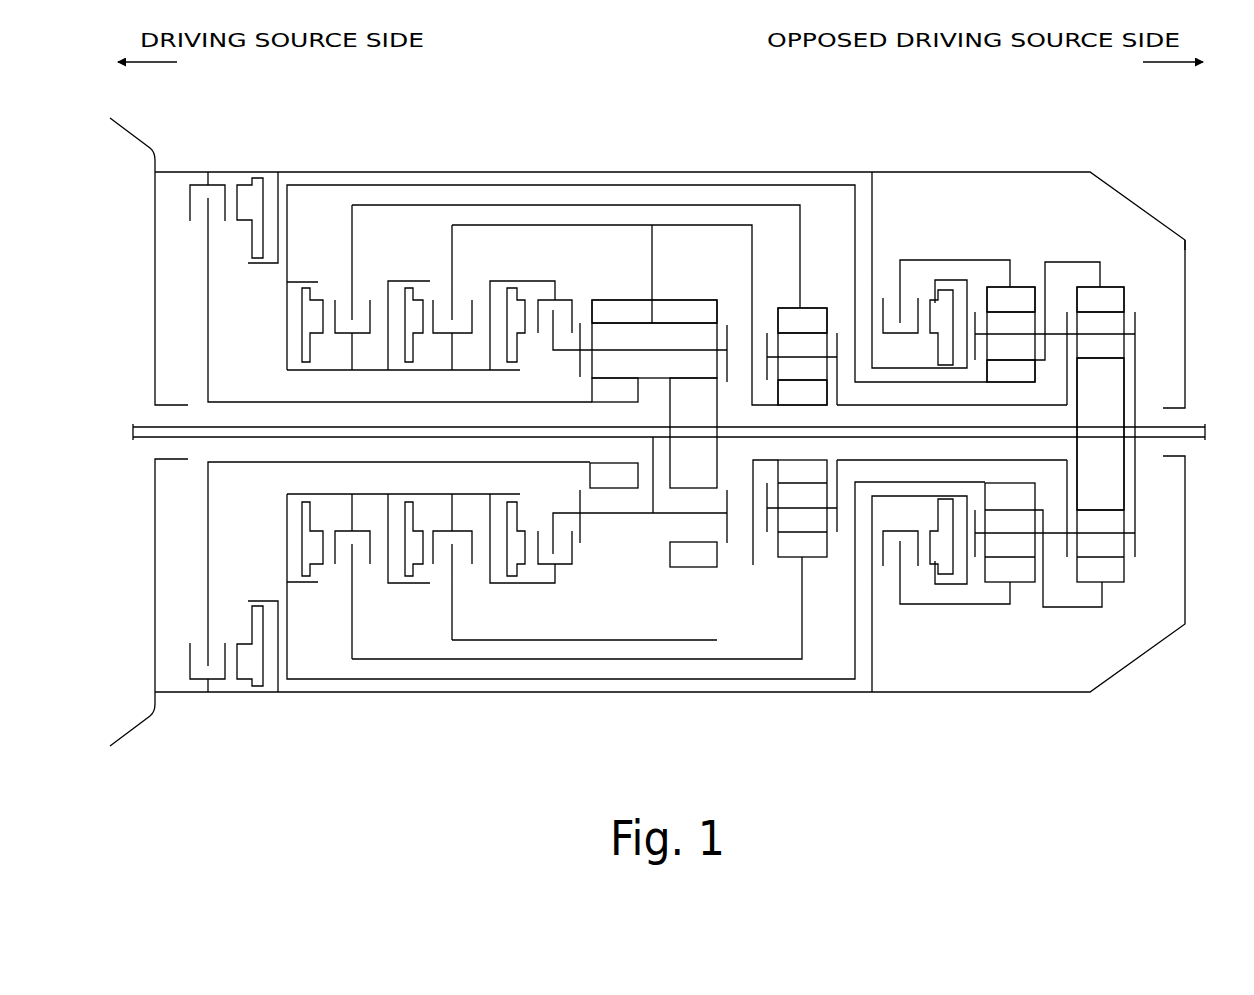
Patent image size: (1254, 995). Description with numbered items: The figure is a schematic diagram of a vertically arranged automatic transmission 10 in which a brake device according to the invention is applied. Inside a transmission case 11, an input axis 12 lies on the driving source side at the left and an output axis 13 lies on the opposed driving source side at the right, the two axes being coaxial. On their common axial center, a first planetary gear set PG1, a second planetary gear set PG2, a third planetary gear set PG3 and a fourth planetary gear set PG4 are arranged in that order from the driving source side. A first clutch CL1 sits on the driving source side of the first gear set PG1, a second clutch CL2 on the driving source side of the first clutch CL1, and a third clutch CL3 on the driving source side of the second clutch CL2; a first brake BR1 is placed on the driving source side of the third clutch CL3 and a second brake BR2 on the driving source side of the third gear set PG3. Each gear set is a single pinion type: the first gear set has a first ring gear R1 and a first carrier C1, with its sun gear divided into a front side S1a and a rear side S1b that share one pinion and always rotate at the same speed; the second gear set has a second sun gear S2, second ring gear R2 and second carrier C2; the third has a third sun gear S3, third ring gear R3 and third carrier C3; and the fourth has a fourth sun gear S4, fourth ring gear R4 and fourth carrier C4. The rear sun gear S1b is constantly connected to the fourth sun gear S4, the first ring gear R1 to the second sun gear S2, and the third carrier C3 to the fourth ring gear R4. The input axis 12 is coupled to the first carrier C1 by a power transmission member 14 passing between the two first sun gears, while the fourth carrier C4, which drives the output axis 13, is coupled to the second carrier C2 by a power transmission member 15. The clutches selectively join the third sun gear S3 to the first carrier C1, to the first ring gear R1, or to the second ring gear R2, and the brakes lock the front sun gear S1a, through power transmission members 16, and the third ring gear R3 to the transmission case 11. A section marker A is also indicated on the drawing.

The automatic transmission 10 is at (1167, 152).
The transmission case 11 is at (752, 169).
The input axis 12 is at (142, 421).
The output axis 13 is at (1197, 422).
The power transmission member 14 is at (660, 500).
The power transmission member 15 is at (948, 407).
The power transmission member 16 is at (218, 403).
The section line A- A is at (863, 162).
The first brake BR1 is at (199, 234).
The second brake BR2 is at (889, 280).
The first clutch CL1 is at (570, 284).
The second clutch CL2 is at (443, 288).
The third clutch CL3 is at (341, 283).
The first planetary gear set PG1 is at (648, 396).
The second planetary gear set PG2 is at (809, 399).
The third planetary gear set PG3 is at (1021, 406).
The fourth planetary gear set PG4 is at (1109, 407).
The first ring gear R1 is at (654, 274).
The second ring gear R2 is at (802, 321).
The third ring gear R3 is at (1011, 300).
The fourth ring gear R4 is at (1100, 300).
The front side of the first sun gear S1a is at (614, 433).
The rear side of the first sun gear S1b is at (693, 433).
The second sun gear S2 is at (802, 392).
The third sun gear S3 is at (1011, 372).
The fourth sun gear S4 is at (1100, 434).
The first carrier C1 is at (648, 438).
The second carrier C2 is at (809, 423).
The third carrier C3 is at (1021, 434).
The fourth carrier C4 is at (1108, 425).